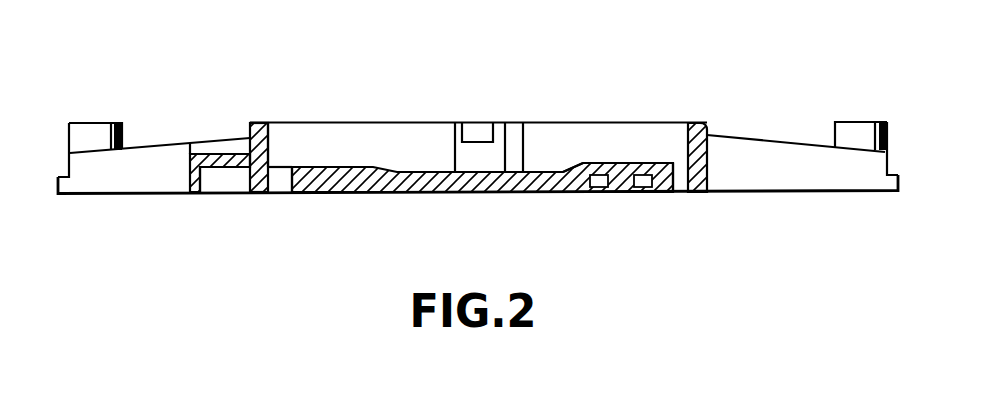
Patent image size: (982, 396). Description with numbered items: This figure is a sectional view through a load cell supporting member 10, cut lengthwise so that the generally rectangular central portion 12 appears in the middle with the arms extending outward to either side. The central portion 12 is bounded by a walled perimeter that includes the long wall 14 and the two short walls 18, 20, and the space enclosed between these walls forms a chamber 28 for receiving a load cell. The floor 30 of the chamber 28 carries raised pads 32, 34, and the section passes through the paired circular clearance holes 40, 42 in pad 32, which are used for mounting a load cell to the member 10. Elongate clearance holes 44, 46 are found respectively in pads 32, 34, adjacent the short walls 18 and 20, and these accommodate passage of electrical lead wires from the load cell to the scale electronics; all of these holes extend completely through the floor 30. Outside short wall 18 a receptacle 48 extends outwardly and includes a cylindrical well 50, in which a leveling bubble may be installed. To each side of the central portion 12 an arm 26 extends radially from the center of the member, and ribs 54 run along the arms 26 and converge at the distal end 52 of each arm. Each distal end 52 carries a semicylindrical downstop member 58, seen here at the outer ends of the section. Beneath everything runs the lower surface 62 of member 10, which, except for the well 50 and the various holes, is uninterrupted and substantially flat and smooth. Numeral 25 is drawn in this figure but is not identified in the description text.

The load cell supporting member 10 is at (294, 89).
The central portion 12 is at (559, 97).
The long wall 14 is at (626, 134).
The short wall 18 is at (259, 123).
The short wall 20 is at (699, 122).
The left frame member 25 is at (150, 186).
The arm 26 is at (167, 143).
The chamber 28 is at (419, 146).
The floor 30 is at (523, 122).
The raised pad 32 is at (585, 163).
The raised pad 34 is at (340, 166).
The circular clearance hole 40 is at (644, 178).
The circular clearance hole 42 is at (599, 180).
The elongate clearance hole 44 is at (277, 183).
The elongate clearance hole 46 is at (680, 185).
The receptacle 48 is at (193, 153).
The cylindrical well 50 is at (204, 180).
The distal end 52 is at (102, 111).
The rib 54 is at (781, 178).
The semicylindrical downstop member 58 is at (122, 122).
The lower surface 62 is at (810, 195).